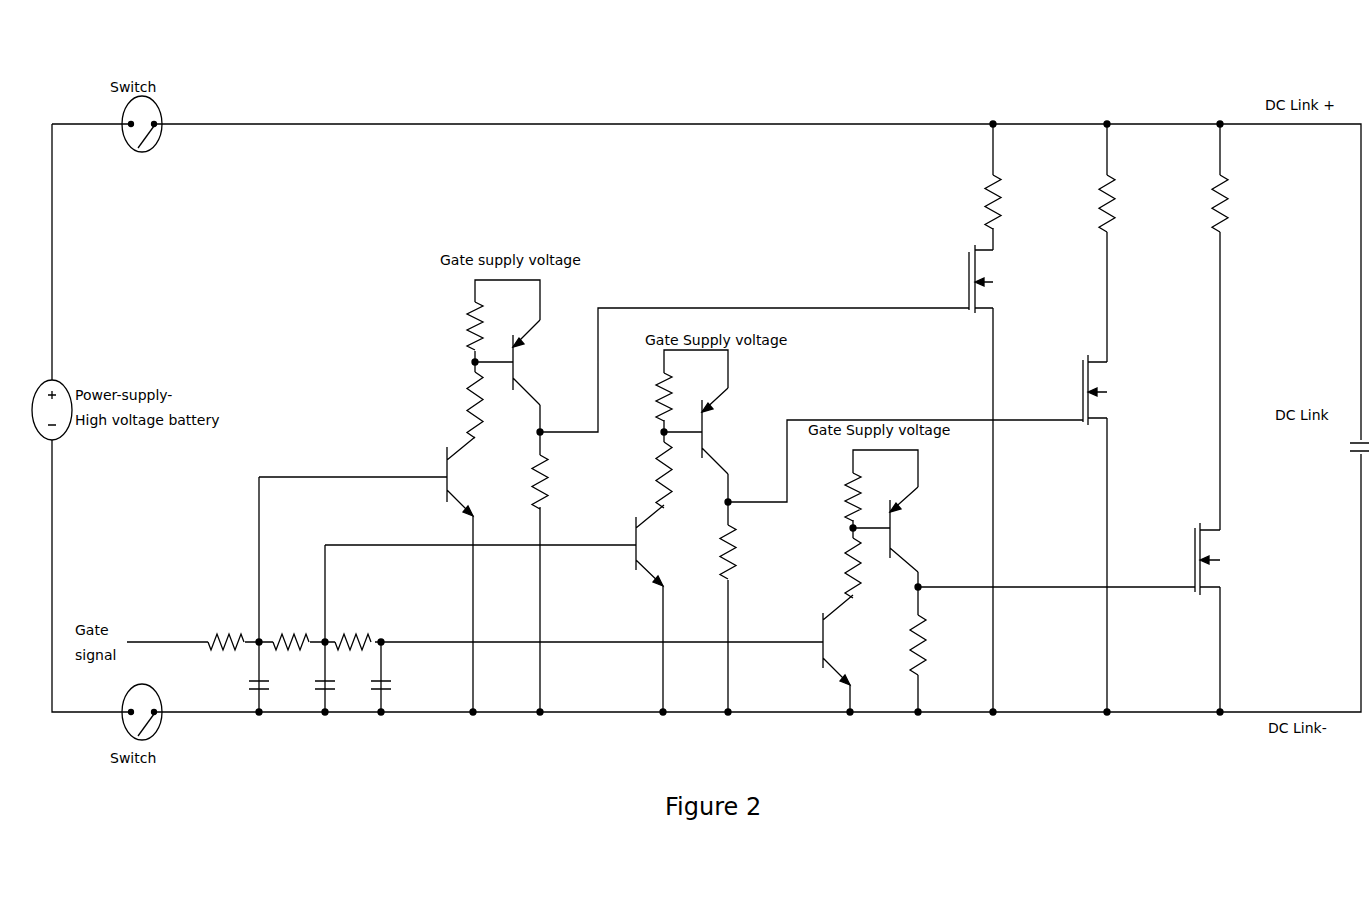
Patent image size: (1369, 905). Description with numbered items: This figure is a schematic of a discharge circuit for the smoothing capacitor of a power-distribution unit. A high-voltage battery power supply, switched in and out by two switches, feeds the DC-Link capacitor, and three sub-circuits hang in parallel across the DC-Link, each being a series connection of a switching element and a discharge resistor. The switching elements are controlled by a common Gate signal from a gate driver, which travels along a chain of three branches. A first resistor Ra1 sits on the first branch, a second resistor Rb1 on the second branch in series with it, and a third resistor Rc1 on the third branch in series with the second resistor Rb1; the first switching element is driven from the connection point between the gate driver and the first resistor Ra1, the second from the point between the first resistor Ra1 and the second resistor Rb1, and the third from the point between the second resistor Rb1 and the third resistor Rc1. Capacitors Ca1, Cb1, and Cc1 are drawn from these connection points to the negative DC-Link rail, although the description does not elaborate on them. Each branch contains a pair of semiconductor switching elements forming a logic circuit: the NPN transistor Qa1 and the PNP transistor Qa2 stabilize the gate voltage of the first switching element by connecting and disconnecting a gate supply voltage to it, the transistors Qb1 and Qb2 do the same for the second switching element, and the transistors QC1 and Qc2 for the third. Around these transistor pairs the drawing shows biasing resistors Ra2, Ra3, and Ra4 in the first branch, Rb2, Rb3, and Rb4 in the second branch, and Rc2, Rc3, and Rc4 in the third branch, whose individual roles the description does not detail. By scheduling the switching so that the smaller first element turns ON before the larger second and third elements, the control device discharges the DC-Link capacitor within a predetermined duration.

The first resistor Ra1 is at (223, 629).
The second resistor Rb1 is at (291, 629).
The third resistor Rc1 is at (353, 629).
The gate signal capacitor phase a Ca1 is at (276, 685).
The gate signal capacitor phase b Cb1 is at (341, 685).
The gate signal capacitor phase c Cc1 is at (396, 685).
The bias resistor Ra2 is at (457, 326).
The bias resistor Ra3 is at (457, 405).
The pull-down resistor Ra4 is at (556, 480).
The NPN transistor Qa1 is at (470, 574).
The PNP transistor Qa2 is at (536, 362).
The bias resistor Rb2 is at (646, 397).
The bias resistor Rb3 is at (646, 475).
The pull-down resistor Rb4 is at (745, 552).
The NPN transistor Qb1 is at (658, 608).
The PNP transistor Qb2 is at (724, 431).
The bias resistor Rc2 is at (834, 497).
The bias resistor Rc3 is at (834, 568).
The pull-down resistor Rc4 is at (933, 645).
The NPN transistor QC1 is at (847, 653).
The PNP transistor Qc2 is at (914, 529).